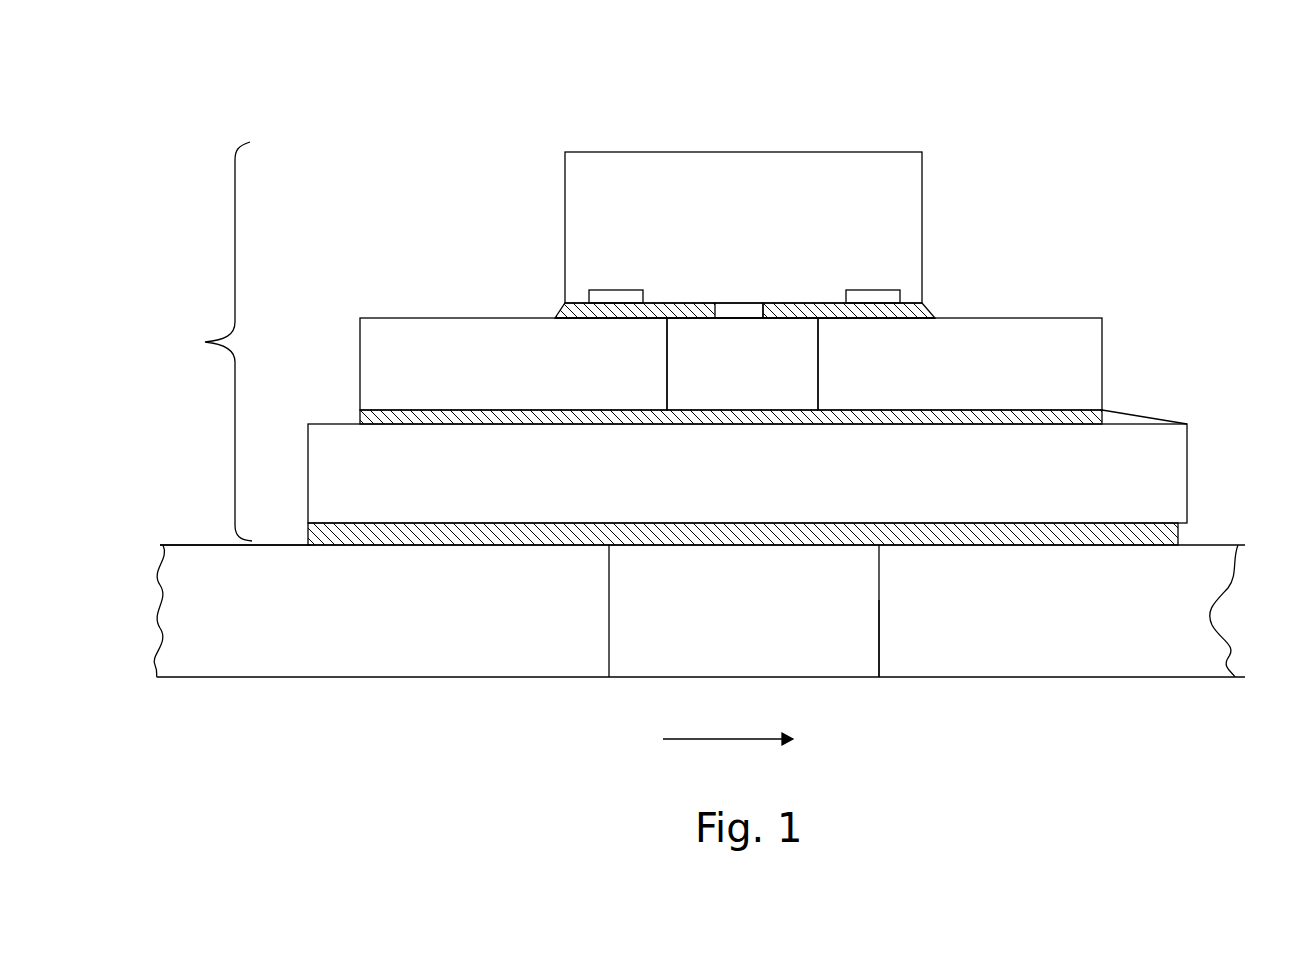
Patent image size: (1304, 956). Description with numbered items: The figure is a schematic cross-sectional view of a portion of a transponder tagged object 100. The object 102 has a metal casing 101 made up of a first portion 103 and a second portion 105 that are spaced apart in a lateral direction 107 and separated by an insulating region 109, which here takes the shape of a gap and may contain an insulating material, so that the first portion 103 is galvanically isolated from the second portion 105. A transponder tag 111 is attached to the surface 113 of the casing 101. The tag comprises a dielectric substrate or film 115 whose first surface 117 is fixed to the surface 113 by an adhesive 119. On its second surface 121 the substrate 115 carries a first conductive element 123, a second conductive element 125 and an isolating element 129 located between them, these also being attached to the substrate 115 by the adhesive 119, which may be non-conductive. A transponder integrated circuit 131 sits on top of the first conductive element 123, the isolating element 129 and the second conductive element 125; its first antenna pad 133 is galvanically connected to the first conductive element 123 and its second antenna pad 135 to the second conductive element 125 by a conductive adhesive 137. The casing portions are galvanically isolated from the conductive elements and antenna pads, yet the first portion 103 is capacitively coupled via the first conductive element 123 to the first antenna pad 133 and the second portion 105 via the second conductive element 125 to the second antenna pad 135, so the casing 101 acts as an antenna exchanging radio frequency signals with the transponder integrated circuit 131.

The transponder tagged object 100 is at (1097, 105).
The metal casing 101 is at (265, 712).
The object 102 is at (1235, 720).
The first portion 103 is at (432, 643).
The second portion 105 is at (991, 645).
The lateral direction 107 is at (680, 740).
The insulating region 109 is at (782, 643).
The transponder tag 111 is at (202, 341).
The surface 113 is at (205, 545).
The dielectric substrate 115 is at (1167, 437).
The first surface 117 is at (1178, 530).
The adhesive 119 is at (753, 542).
The second surface 121 is at (1163, 420).
The first conductive element 123 is at (417, 325).
The second conductive element 125 is at (1082, 332).
The isolating element 129 is at (770, 382).
The transponder integrated circuit 131 is at (898, 181).
The first antenna pad 133 is at (612, 290).
The second antenna pad 135 is at (878, 290).
The conductive adhesive 137 is at (565, 314).